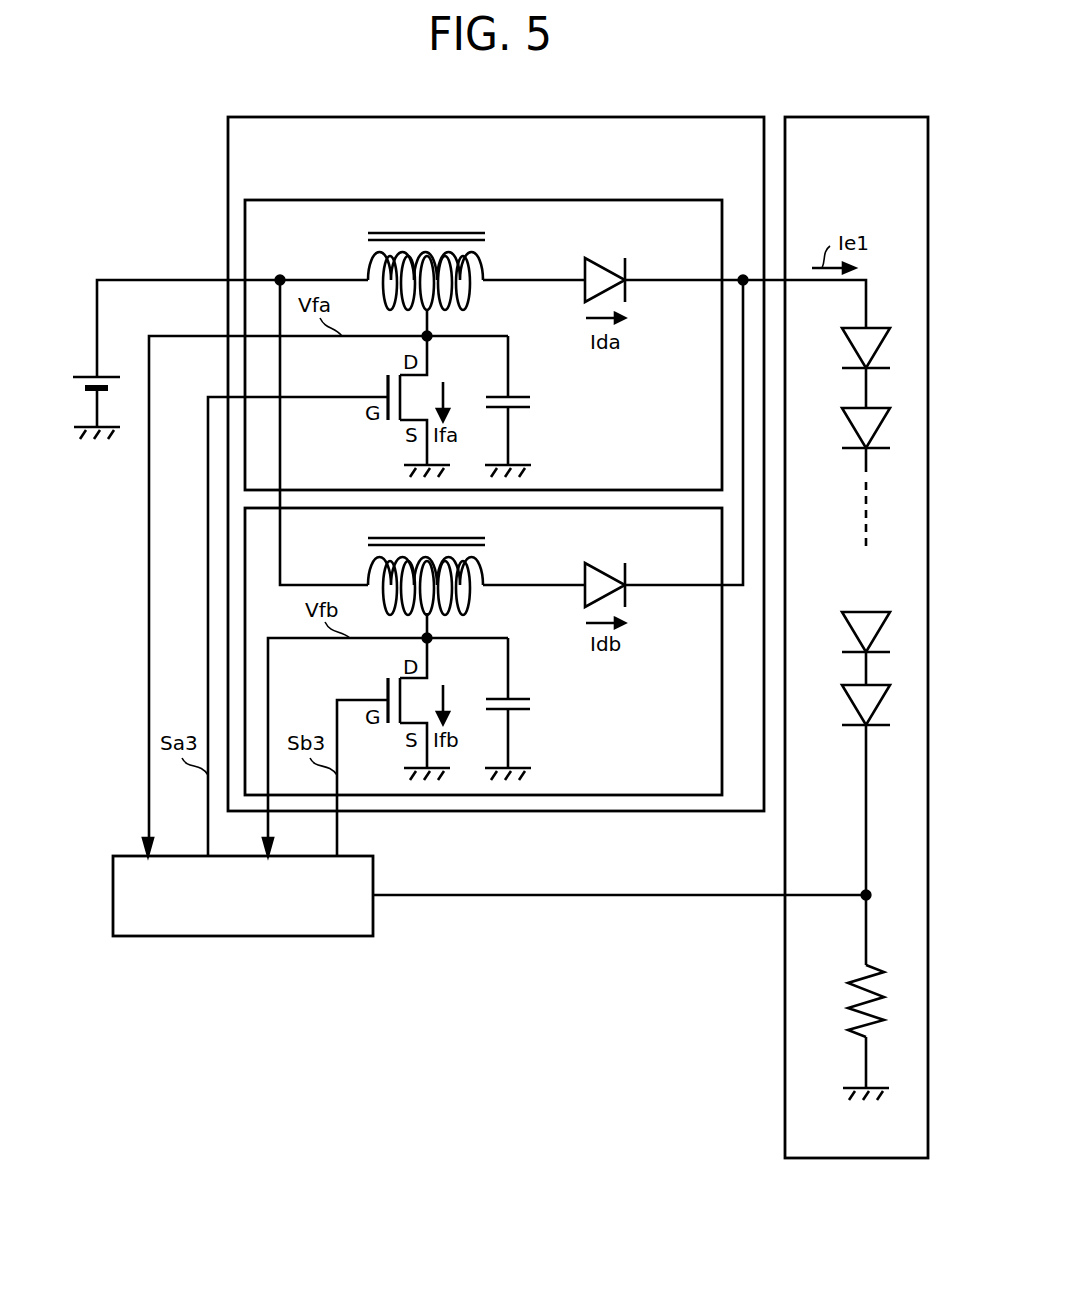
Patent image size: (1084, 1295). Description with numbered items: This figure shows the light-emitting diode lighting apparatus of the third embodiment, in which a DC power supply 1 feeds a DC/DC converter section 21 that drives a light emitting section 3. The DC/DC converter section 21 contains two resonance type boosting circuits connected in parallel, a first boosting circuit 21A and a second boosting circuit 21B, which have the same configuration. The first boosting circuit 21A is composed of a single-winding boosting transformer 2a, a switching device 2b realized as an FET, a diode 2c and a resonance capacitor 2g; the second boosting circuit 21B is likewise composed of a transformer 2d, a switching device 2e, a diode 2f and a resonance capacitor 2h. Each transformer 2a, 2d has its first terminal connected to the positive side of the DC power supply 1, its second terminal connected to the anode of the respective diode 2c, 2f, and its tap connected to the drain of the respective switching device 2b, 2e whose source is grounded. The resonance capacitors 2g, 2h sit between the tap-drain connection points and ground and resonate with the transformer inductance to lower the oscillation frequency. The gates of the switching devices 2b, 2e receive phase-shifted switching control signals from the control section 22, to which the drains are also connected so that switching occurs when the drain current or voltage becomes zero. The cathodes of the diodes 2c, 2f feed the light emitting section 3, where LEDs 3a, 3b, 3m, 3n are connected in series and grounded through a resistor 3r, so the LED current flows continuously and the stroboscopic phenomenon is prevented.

The DC power supply 1 is at (85, 375).
The DC/DC converter section 21 is at (333, 117).
The first boosting circuit 21A is at (678, 200).
The second boosting circuit 21B is at (678, 811).
The transformer 2a is at (368, 258).
The switching device 2b is at (388, 382).
The diode 2c is at (612, 268).
The resonance capacitor 2g is at (520, 396).
The transformer 2d is at (368, 561).
The switching device 2e is at (388, 684).
The diode 2f is at (612, 572).
The resonance capacitor 2h is at (520, 698).
The control section 22 is at (113, 880).
The light emitting section 3 is at (858, 117).
The LED 3a is at (846, 330).
The LED 3b is at (846, 409).
The LED 3m is at (846, 612).
The LED 3n is at (846, 685).
The resistor 3r is at (858, 978).